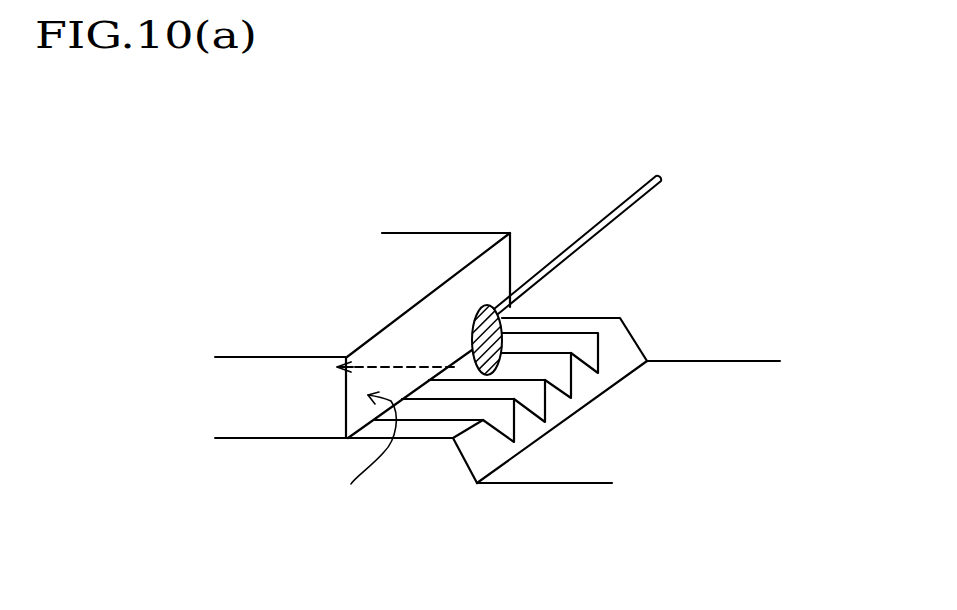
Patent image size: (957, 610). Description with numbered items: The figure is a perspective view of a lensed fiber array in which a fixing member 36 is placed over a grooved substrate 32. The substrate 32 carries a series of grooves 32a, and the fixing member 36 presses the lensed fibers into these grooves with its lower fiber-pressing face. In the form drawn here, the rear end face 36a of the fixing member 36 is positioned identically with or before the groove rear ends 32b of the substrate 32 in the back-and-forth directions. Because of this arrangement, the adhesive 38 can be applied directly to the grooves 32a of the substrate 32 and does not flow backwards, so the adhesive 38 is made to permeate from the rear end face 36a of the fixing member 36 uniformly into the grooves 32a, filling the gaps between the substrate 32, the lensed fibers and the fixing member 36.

The substrate 32 is at (742, 380).
The grooves 32a is at (505, 414).
The groove rear ends 32b is at (619, 359).
The fixing member 36 is at (430, 247).
The rear end face 36a is at (382, 435).
The adhesive 38 is at (500, 295).